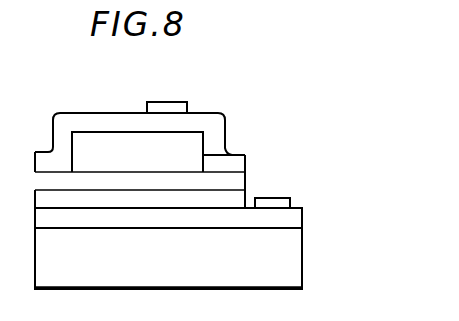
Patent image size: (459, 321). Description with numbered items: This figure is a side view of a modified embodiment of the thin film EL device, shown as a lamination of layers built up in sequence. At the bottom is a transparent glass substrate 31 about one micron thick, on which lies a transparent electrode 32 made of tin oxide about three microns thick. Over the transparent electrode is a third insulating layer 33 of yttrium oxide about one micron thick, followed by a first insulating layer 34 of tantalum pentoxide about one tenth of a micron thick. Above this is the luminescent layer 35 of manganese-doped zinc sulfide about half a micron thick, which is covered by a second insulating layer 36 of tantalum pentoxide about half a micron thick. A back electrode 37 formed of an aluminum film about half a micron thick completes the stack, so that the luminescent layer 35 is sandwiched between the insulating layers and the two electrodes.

The transparent glass substrate 31 is at (302, 260).
The transparent electrode 32 is at (302, 219).
The third insulating layer 33 is at (246, 195).
The first insulating layer 34 is at (246, 178).
The luminescent layer 35 is at (205, 157).
The second insulating layer 36 is at (226, 123).
The back electrode 37 is at (190, 104).